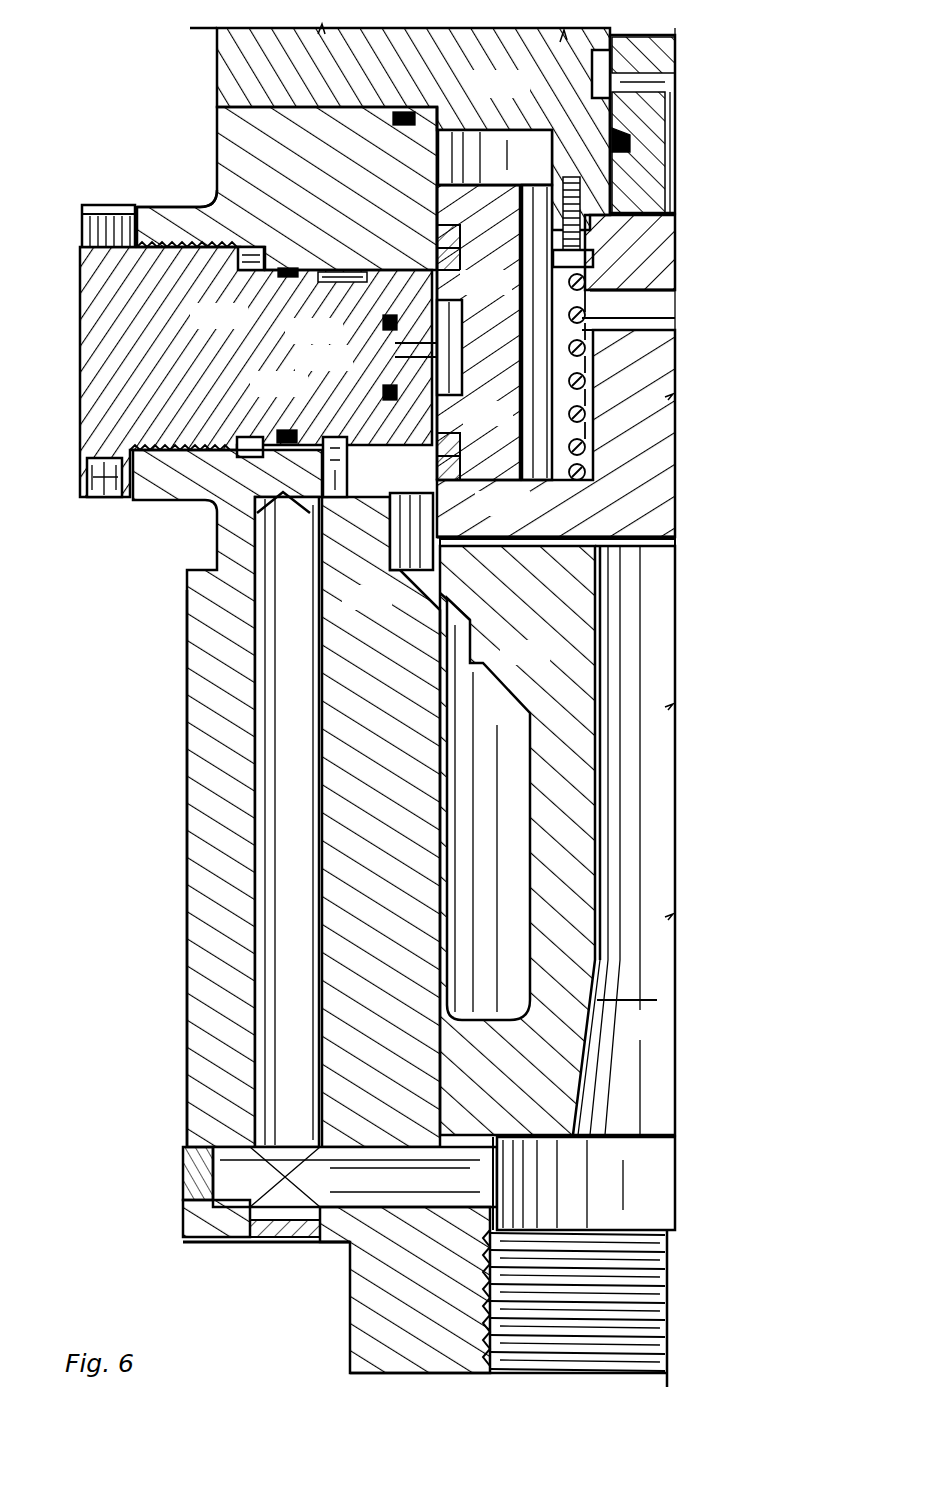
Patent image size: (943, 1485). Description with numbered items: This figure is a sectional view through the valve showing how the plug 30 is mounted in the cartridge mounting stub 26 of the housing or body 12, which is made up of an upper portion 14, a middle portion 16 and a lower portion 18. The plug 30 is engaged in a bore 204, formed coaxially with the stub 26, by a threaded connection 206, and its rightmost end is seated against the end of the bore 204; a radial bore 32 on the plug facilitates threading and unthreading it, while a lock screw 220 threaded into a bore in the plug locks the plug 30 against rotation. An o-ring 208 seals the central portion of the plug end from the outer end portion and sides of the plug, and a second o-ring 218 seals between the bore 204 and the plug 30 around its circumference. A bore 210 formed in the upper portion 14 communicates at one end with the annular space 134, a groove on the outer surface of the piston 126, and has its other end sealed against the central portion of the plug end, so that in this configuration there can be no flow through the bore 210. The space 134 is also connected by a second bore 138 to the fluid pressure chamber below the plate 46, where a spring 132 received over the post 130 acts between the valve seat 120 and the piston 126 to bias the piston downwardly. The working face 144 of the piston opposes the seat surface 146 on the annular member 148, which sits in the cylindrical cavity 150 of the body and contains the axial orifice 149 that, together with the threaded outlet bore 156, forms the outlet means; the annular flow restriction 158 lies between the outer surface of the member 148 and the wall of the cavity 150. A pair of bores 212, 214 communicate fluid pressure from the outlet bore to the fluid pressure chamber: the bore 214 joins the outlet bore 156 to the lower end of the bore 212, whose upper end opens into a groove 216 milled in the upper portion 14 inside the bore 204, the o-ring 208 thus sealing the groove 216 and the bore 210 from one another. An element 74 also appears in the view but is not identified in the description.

The housing or body 12 is at (197, 655).
The upper portion 14 is at (217, 122).
The middle portion 16 is at (190, 618).
The lower portion 18 is at (350, 1345).
The cartridge mounting stub 26 is at (180, 207).
The plug 30 is at (80, 332).
The radial bore 32 is at (88, 482).
The plate 46 is at (217, 65).
The retainer 74 is at (660, 68).
The valve seat 120 is at (648, 248).
The piston 126 is at (470, 215).
The post 130 is at (650, 440).
The spring 132 is at (655, 322).
The annular space 134 is at (460, 370).
The second bore 138 is at (482, 345).
The working face 144 is at (600, 555).
The seat surface 146 is at (480, 540).
The annular member 148 is at (572, 797).
The axial orifice 149 is at (600, 618).
The cylindrical cavity 150 is at (445, 872).
The threaded outlet bore 156 is at (640, 1178).
The annular flow restriction 158 is at (457, 638).
The bore 204 is at (268, 290).
The threaded connection 206 is at (183, 455).
The o-ring 208 is at (383, 322).
The bore 210 is at (437, 362).
The bore 212 is at (280, 875).
The bore 214 is at (362, 1192).
The groove 216 is at (350, 507).
The second o-ring 218 is at (292, 432).
The lock screw 220 is at (112, 207).